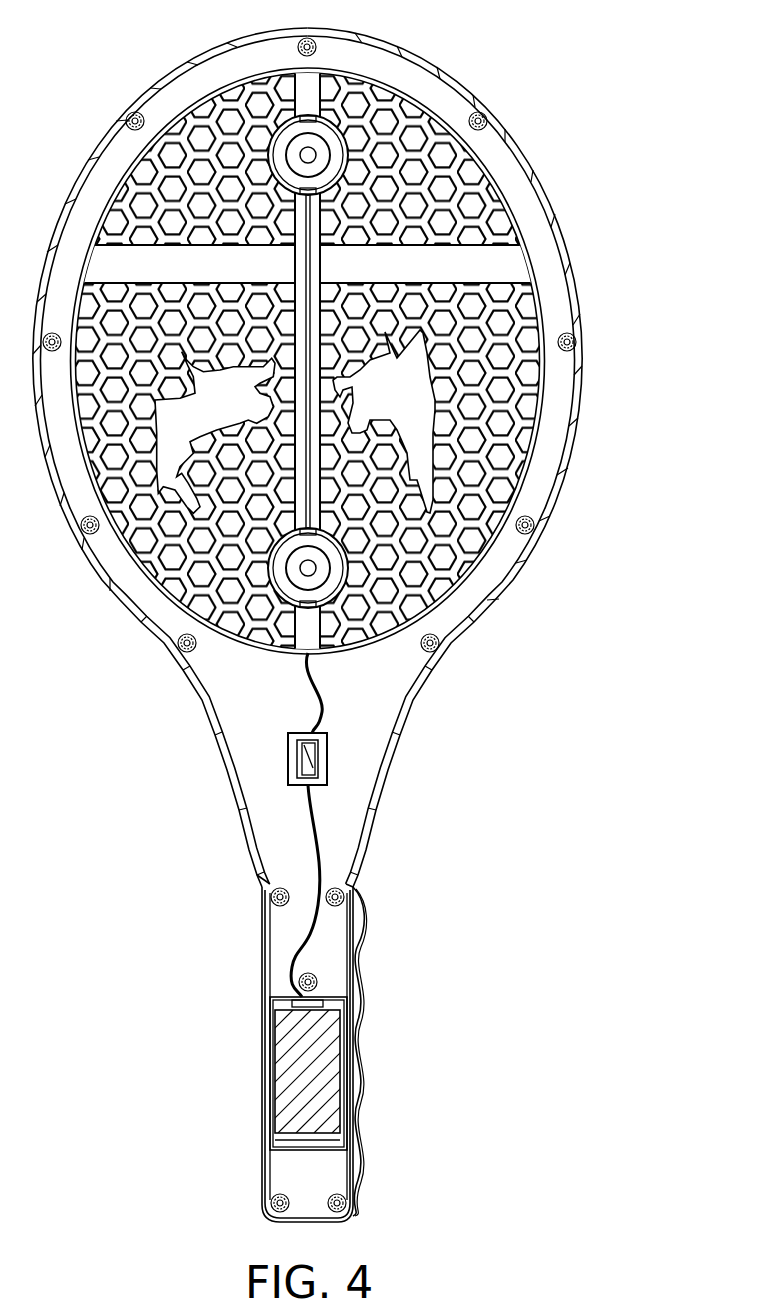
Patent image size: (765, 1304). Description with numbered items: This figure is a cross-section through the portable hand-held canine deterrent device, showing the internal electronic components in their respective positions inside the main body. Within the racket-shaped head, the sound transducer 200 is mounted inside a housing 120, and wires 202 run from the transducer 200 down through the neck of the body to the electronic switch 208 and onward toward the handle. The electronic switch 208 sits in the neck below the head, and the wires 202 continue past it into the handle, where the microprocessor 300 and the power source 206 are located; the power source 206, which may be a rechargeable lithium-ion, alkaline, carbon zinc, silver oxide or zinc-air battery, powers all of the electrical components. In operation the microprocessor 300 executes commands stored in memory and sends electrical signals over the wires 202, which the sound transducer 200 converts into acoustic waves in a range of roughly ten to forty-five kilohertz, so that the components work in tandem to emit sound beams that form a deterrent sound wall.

The housing 120 is at (342, 165).
The sound transducer 200 is at (315, 147).
The wires 202 is at (310, 358).
The electronic switch 208 is at (307, 758).
The microprocessor 300 is at (352, 973).
The power source 206 is at (317, 1073).